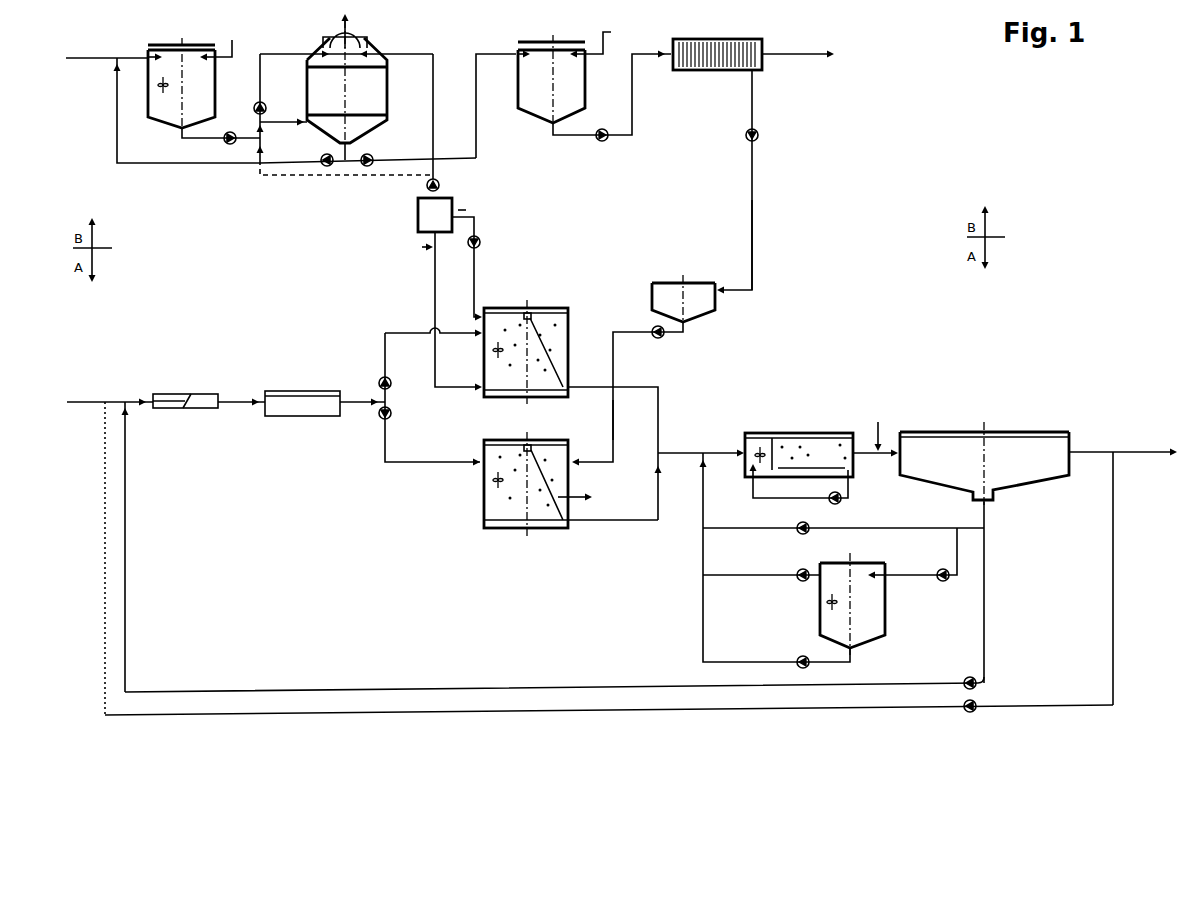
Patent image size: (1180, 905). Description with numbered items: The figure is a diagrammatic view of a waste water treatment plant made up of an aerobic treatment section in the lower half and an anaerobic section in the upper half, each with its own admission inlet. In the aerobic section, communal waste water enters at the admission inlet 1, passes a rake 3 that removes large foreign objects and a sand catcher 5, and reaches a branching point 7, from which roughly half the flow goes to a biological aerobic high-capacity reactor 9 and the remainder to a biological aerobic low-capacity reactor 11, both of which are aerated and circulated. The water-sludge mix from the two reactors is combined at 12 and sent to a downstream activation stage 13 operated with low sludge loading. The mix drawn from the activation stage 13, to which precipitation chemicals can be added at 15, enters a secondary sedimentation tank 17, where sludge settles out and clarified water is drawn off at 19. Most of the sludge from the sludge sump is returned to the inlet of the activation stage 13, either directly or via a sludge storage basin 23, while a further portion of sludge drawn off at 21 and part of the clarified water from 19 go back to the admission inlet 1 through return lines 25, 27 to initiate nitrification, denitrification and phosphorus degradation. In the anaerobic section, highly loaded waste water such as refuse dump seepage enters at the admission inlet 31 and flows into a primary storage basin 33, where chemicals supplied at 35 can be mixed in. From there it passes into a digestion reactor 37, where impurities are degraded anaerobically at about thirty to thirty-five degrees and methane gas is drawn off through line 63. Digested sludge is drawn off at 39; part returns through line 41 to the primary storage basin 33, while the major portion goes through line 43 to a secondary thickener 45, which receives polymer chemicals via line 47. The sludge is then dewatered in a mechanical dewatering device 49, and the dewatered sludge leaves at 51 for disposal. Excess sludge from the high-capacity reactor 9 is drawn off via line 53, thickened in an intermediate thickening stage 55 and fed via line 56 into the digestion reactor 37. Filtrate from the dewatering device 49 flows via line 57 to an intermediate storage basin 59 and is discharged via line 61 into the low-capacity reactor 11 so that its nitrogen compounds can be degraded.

The admission inlet 1 is at (80, 399).
The rake 3 is at (200, 390).
The sand catcher 5 is at (287, 390).
The branching point 7 is at (391, 404).
The biological aerobic high-capacity reactor 9 is at (569, 312).
The biological aerobic low-capacity reactor 11 is at (484, 510).
The combining point 12 is at (661, 452).
The activation stage 13 is at (800, 430).
The precipitation chemical addition point 15 is at (878, 422).
The secondary sedimentation tank 17 is at (960, 430).
The clarified water draw-off 19 is at (1158, 447).
The sludge draw-off 21 is at (993, 500).
The sludge storage basin 23 is at (887, 612).
The return line 25 is at (575, 683).
The return line 27 is at (500, 708).
The admission inlet 31 is at (73, 54).
The primary storage basin 33 is at (208, 81).
The chemical supply 35 is at (232, 40).
The digestion reactor 37 is at (373, 94).
The digested sludge draw-off 39 is at (347, 149).
The return line 41 is at (116, 136).
The line 43 is at (476, 134).
The secondary thickener 45 is at (580, 88).
The line 47 is at (609, 38).
The mechanical dewatering device 49 is at (712, 36).
The dewatered sludge draw-off 51 is at (815, 47).
The line 53 is at (435, 293).
The intermediate thickening stage 55 is at (443, 211).
The line 56 is at (408, 50).
The line 57 is at (751, 246).
The intermediate storage basin 59 is at (672, 290).
The line 61 is at (613, 420).
The line 63 is at (349, 23).